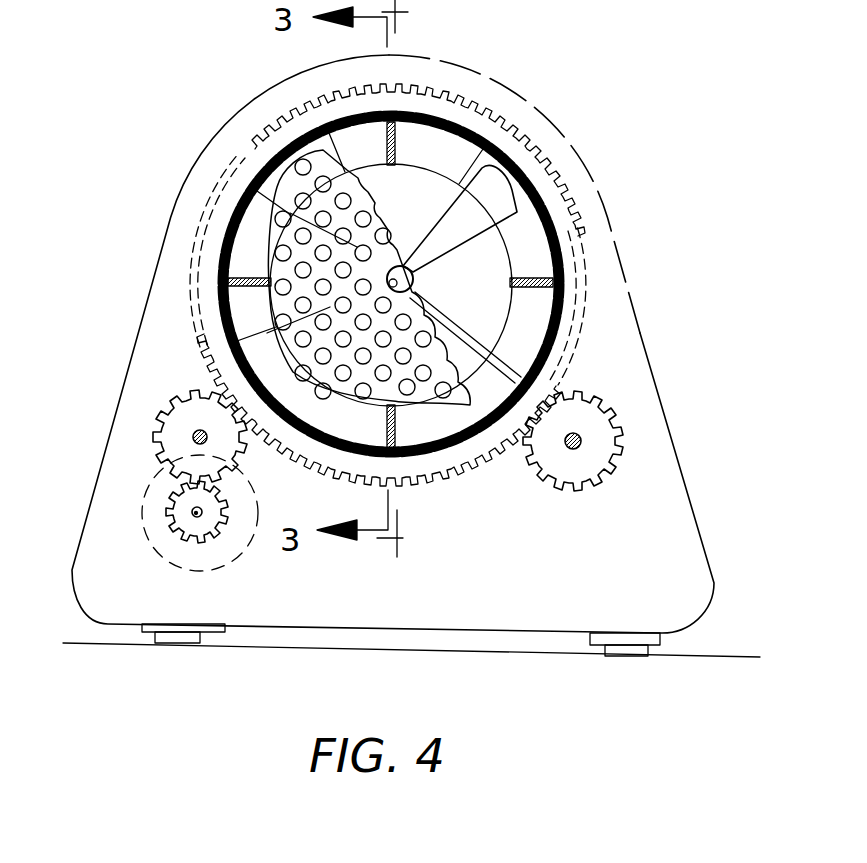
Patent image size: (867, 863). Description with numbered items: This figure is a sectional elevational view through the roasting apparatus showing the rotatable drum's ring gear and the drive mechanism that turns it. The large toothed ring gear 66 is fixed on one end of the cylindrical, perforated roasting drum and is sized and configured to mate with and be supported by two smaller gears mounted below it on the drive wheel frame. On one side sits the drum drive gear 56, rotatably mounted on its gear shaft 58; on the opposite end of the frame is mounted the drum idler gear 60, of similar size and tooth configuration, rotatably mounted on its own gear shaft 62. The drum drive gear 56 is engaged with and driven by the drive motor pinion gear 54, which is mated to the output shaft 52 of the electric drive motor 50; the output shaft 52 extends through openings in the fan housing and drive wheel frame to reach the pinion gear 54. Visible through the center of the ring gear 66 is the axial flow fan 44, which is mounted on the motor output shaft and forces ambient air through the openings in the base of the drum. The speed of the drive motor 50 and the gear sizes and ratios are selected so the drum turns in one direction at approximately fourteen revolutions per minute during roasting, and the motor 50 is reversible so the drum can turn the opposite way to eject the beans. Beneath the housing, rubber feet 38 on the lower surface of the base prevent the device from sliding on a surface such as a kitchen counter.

The rubber feet 38 is at (176, 640).
The axial flow fan 44 is at (493, 204).
The electric drive motor 50 is at (184, 596).
The output shaft 52 is at (194, 516).
The drive motor pinion gear 54 is at (218, 538).
The drum drive gear 56 is at (153, 437).
The gear shaft 58 is at (200, 430).
The drum idler gear 60 is at (600, 448).
The gear shaft 62 is at (575, 453).
The ring gear 66 is at (438, 492).